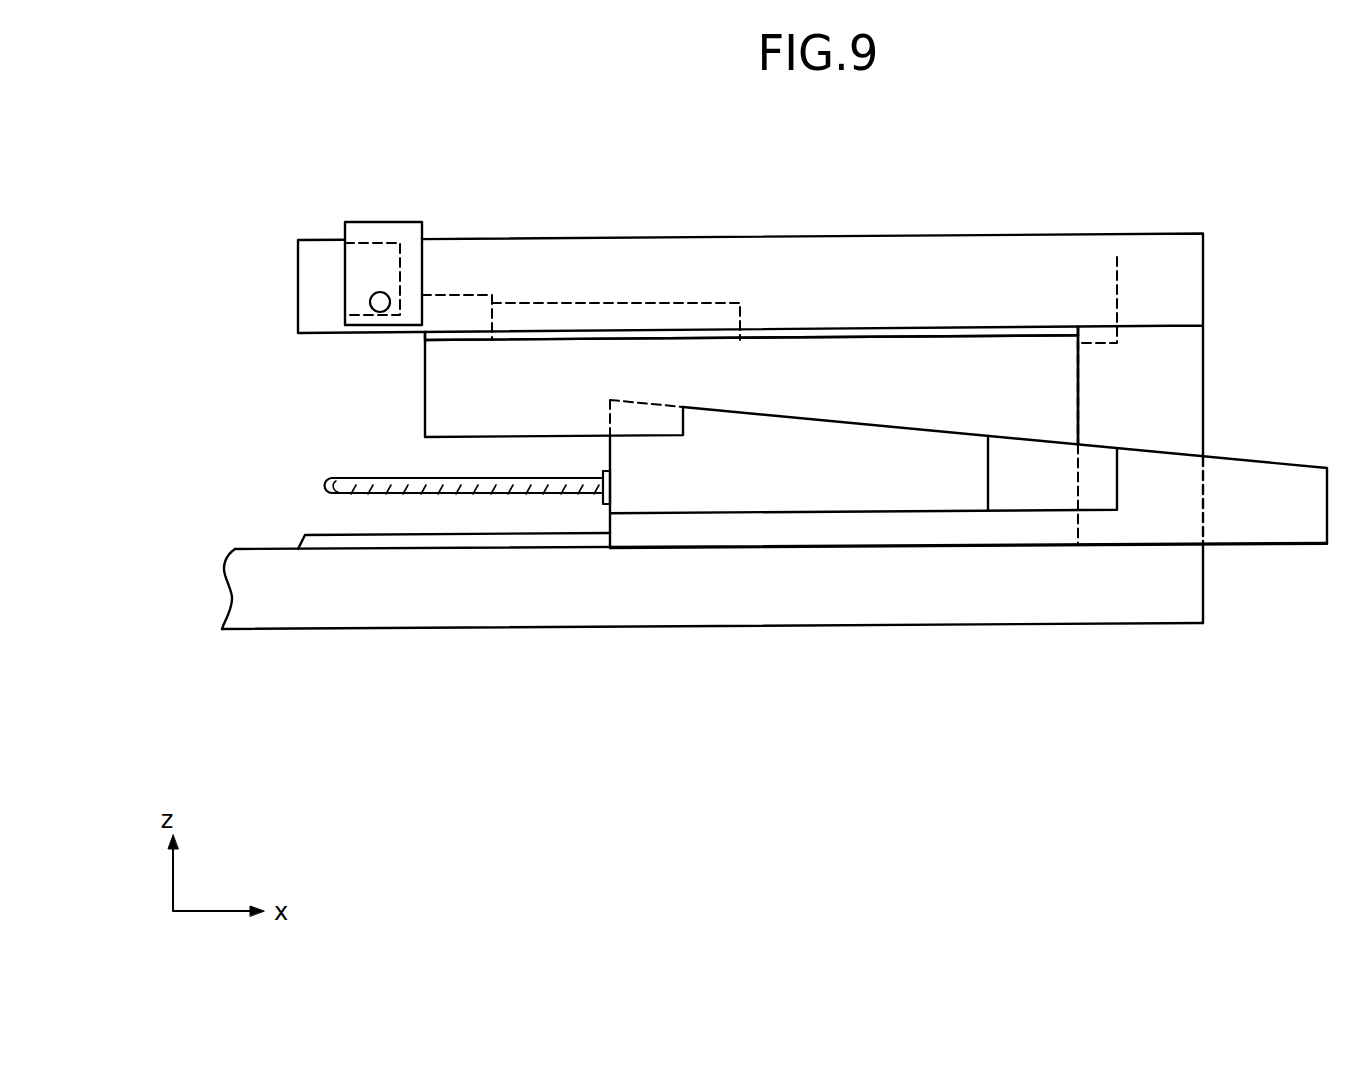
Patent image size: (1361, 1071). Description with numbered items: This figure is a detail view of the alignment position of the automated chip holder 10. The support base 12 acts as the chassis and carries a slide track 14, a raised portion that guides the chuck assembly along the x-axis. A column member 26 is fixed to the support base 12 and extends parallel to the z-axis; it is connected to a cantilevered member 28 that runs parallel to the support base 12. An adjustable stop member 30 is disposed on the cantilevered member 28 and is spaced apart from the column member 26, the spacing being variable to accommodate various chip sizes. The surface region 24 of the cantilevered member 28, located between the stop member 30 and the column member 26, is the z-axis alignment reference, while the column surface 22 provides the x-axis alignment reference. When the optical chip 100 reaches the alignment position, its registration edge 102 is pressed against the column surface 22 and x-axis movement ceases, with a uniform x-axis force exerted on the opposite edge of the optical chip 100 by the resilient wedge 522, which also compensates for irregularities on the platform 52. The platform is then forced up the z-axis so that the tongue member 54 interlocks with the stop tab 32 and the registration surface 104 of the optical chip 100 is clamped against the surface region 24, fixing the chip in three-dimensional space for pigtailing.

The automated chip holder 10 is at (198, 731).
The support base 12 is at (305, 605).
The slide track 14 is at (438, 542).
The column surface 22 is at (1082, 333).
The surface region 24 is at (928, 327).
The column member 26 is at (1177, 406).
The cantilevered member 28 is at (1072, 250).
The adjustable stop member 30 is at (372, 232).
The stop tab 32 is at (408, 267).
The platform 52 is at (347, 480).
The tongue member 54 is at (460, 317).
The optical chip 100 is at (780, 333).
The registration edge 102 is at (1073, 343).
The registration surface 104 is at (885, 338).
The resilient wedge 522 is at (635, 318).